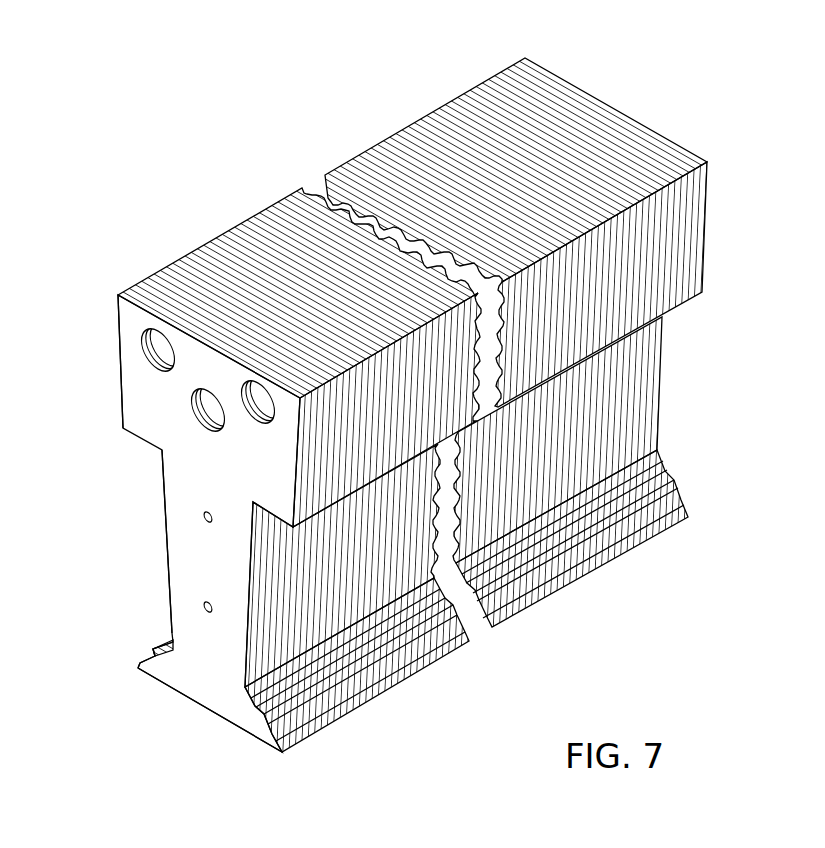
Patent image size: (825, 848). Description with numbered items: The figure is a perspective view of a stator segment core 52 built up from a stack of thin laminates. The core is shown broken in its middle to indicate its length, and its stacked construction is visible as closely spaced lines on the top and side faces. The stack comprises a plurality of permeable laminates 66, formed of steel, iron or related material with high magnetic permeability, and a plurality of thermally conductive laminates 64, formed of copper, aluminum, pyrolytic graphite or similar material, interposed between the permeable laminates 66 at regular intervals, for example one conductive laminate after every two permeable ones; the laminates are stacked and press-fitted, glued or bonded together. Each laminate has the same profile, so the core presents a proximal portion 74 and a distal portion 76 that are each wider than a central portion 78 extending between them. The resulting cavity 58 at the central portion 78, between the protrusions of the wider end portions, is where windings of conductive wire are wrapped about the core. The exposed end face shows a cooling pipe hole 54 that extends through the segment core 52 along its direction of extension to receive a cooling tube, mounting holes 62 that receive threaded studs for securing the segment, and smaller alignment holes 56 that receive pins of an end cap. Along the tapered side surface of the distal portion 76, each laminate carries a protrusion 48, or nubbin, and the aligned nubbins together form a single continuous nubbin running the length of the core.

The stator segment core 52 is at (750, 98).
The protrusion 48 is at (264, 723).
The cooling pipe hole 54 is at (206, 412).
The alignment holes 56 is at (204, 517).
The cavity 58 is at (343, 617).
The mounting holes 62 is at (156, 351).
The thermally conductive laminates 64 is at (183, 260).
The permeable laminates 66 is at (262, 213).
The proximal portion 74 is at (118, 335).
The distal portion 76 is at (140, 670).
The central portion 78 is at (165, 520).